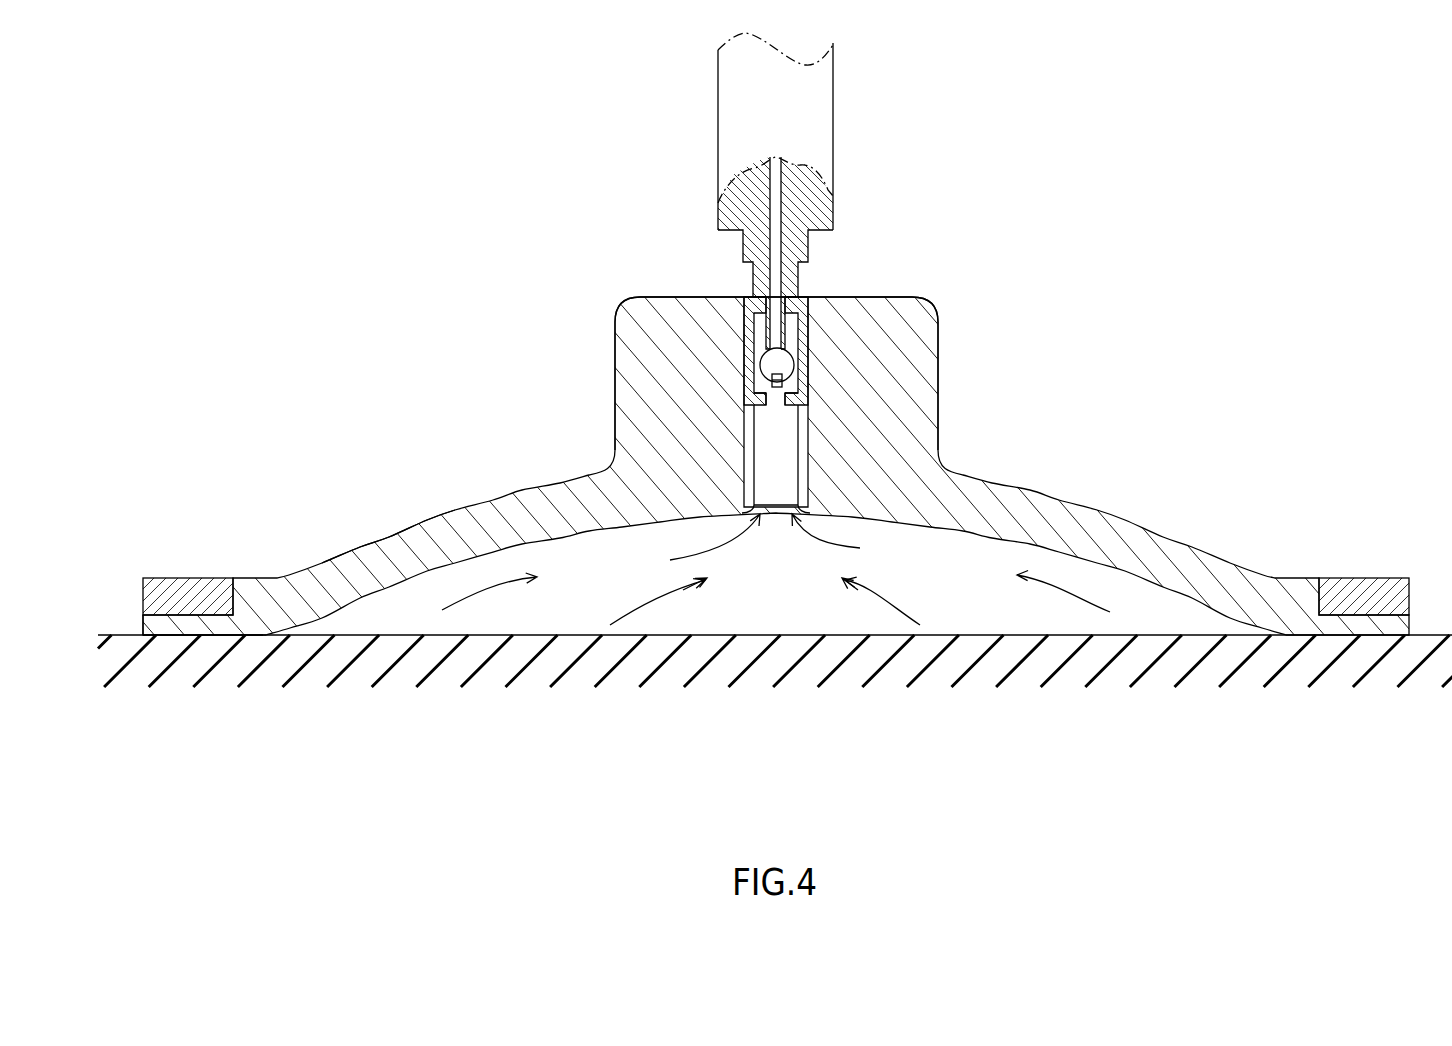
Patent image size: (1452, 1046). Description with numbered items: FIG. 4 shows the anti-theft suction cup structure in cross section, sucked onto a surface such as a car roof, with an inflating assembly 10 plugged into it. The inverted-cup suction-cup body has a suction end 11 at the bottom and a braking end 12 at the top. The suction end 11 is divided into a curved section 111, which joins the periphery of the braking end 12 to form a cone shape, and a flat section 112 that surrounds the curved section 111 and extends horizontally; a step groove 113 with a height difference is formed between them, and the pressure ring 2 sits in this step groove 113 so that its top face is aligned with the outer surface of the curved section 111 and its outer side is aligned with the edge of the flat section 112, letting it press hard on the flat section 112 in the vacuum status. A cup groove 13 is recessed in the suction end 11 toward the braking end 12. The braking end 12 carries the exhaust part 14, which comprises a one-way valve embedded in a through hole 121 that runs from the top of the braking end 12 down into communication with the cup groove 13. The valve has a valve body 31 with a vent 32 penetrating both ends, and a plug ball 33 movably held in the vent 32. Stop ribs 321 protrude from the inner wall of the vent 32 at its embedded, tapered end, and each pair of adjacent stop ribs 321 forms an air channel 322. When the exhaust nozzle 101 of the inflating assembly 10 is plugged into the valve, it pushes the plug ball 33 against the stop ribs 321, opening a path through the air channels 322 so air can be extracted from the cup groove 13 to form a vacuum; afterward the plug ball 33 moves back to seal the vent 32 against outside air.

The inflating assembly 10 is at (833, 136).
The exhaust part 14 is at (728, 274).
The exhaust nozzle 101 is at (796, 337).
The vent 32 is at (760, 422).
The plug ball 33 is at (757, 345).
The valve body 31 is at (800, 364).
The stop ribs 321 is at (805, 396).
The air channel 322 is at (805, 411).
The braking end 12 is at (954, 416).
The through hole 121 is at (766, 457).
The cup groove 13 is at (966, 574).
The pressure ring 2 is at (200, 577).
The step groove 113 is at (164, 618).
The flat section 112 is at (198, 630).
The curved section 111 is at (400, 569).
The suction end 11 is at (355, 783).